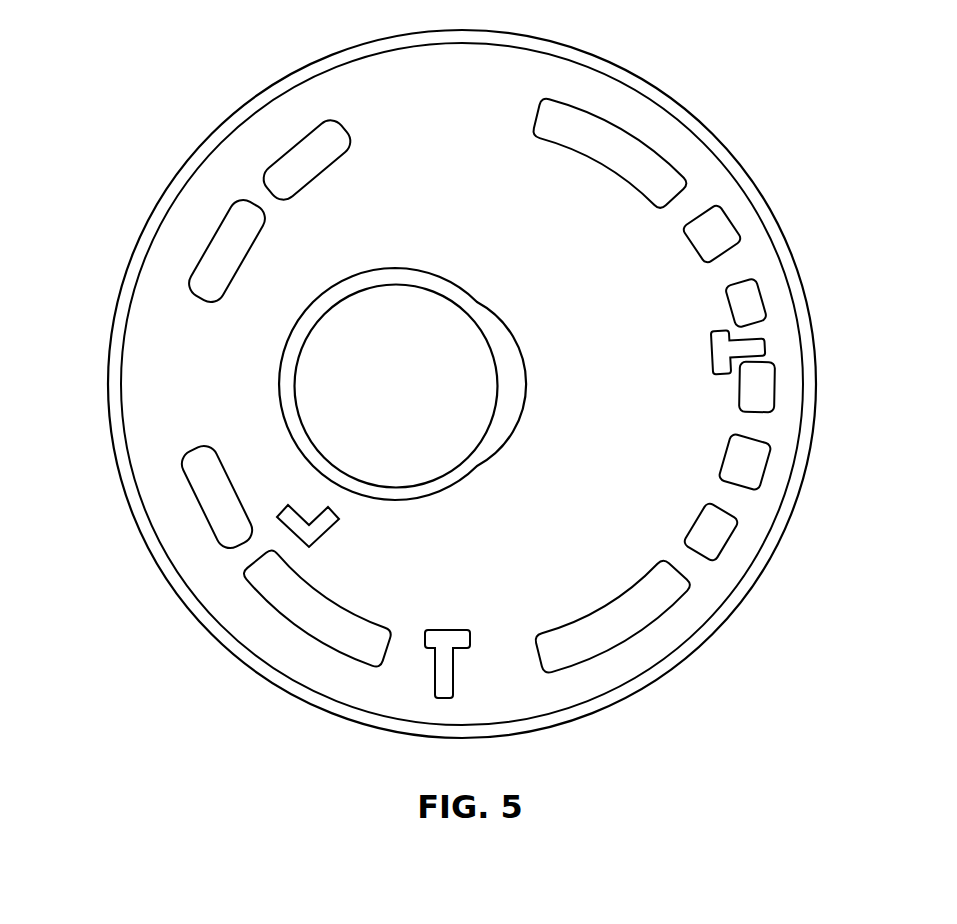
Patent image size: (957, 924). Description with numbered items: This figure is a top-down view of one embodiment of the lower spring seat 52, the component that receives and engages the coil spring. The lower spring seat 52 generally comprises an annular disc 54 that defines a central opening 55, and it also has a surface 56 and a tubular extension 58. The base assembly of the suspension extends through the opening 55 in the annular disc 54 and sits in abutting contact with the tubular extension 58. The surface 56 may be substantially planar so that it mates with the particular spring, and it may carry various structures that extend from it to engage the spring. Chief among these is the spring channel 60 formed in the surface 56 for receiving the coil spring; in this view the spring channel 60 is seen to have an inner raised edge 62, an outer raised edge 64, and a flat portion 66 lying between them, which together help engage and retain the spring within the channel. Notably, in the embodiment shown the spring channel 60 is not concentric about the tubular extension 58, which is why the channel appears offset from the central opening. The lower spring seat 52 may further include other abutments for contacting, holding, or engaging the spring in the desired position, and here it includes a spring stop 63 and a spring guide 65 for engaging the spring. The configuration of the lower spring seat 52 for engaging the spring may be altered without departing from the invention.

The lower spring seat 52 is at (164, 246).
The annular disc 54 is at (352, 565).
The opening 55 is at (298, 414).
The surface 56 is at (663, 250).
The tubular extension 58 is at (443, 297).
The spring channel 60 is at (268, 370).
The inner raised edge 62 is at (663, 418).
The spring stop 63 is at (285, 520).
The outer raised edge 64 is at (788, 527).
The spring guide 65 is at (750, 350).
The flat portion 66 is at (262, 200).